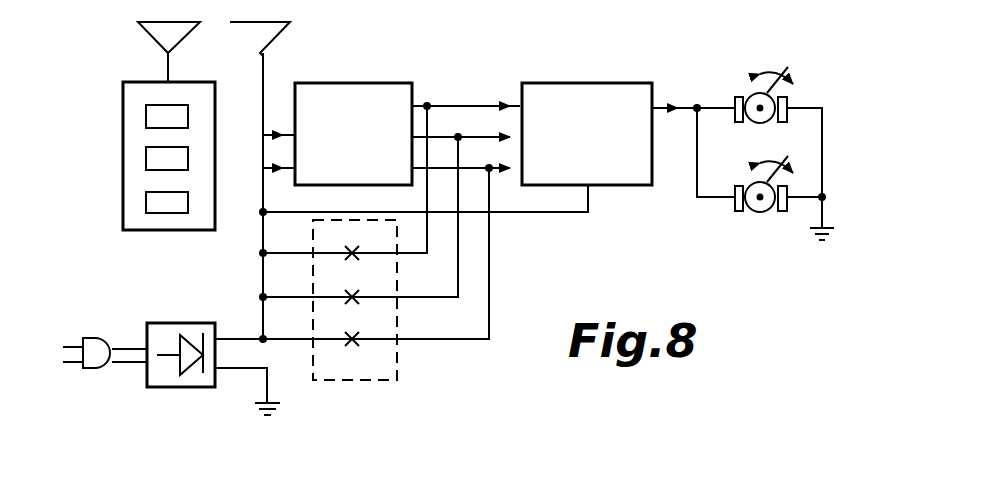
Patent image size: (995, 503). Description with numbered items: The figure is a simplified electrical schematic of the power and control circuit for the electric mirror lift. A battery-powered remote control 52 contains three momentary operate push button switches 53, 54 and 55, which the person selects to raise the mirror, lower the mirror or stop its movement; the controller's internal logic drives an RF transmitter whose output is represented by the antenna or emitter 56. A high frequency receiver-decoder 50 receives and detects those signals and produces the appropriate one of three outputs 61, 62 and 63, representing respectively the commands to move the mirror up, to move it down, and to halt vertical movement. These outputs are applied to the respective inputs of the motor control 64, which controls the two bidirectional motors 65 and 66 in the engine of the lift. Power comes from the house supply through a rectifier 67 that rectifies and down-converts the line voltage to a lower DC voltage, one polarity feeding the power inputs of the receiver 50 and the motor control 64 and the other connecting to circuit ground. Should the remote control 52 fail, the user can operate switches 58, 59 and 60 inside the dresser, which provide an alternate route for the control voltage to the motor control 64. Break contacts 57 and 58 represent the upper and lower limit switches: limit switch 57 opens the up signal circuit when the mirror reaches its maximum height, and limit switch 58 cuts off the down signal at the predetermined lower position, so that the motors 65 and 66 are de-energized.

The high frequency receiver-decoder 50 is at (367, 127).
The remote control 52 is at (123, 172).
The momentary operate push button switch 53 is at (188, 116).
The momentary operate push button switch 54 is at (188, 159).
The momentary operate push button switch 55 is at (188, 203).
The antenna or emitter 56 is at (152, 43).
The upper limit switch 57 is at (497, 102).
The lower limit switch 58 is at (470, 75).
The switch 59 is at (355, 284).
The switch 60 is at (355, 325).
The output 61 is at (429, 103).
The output 62 is at (442, 150).
The output 63 is at (491, 172).
The motor control 64 is at (600, 140).
The motor 65 is at (752, 92).
The motor 66 is at (752, 180).
The rectifier 67 is at (187, 322).